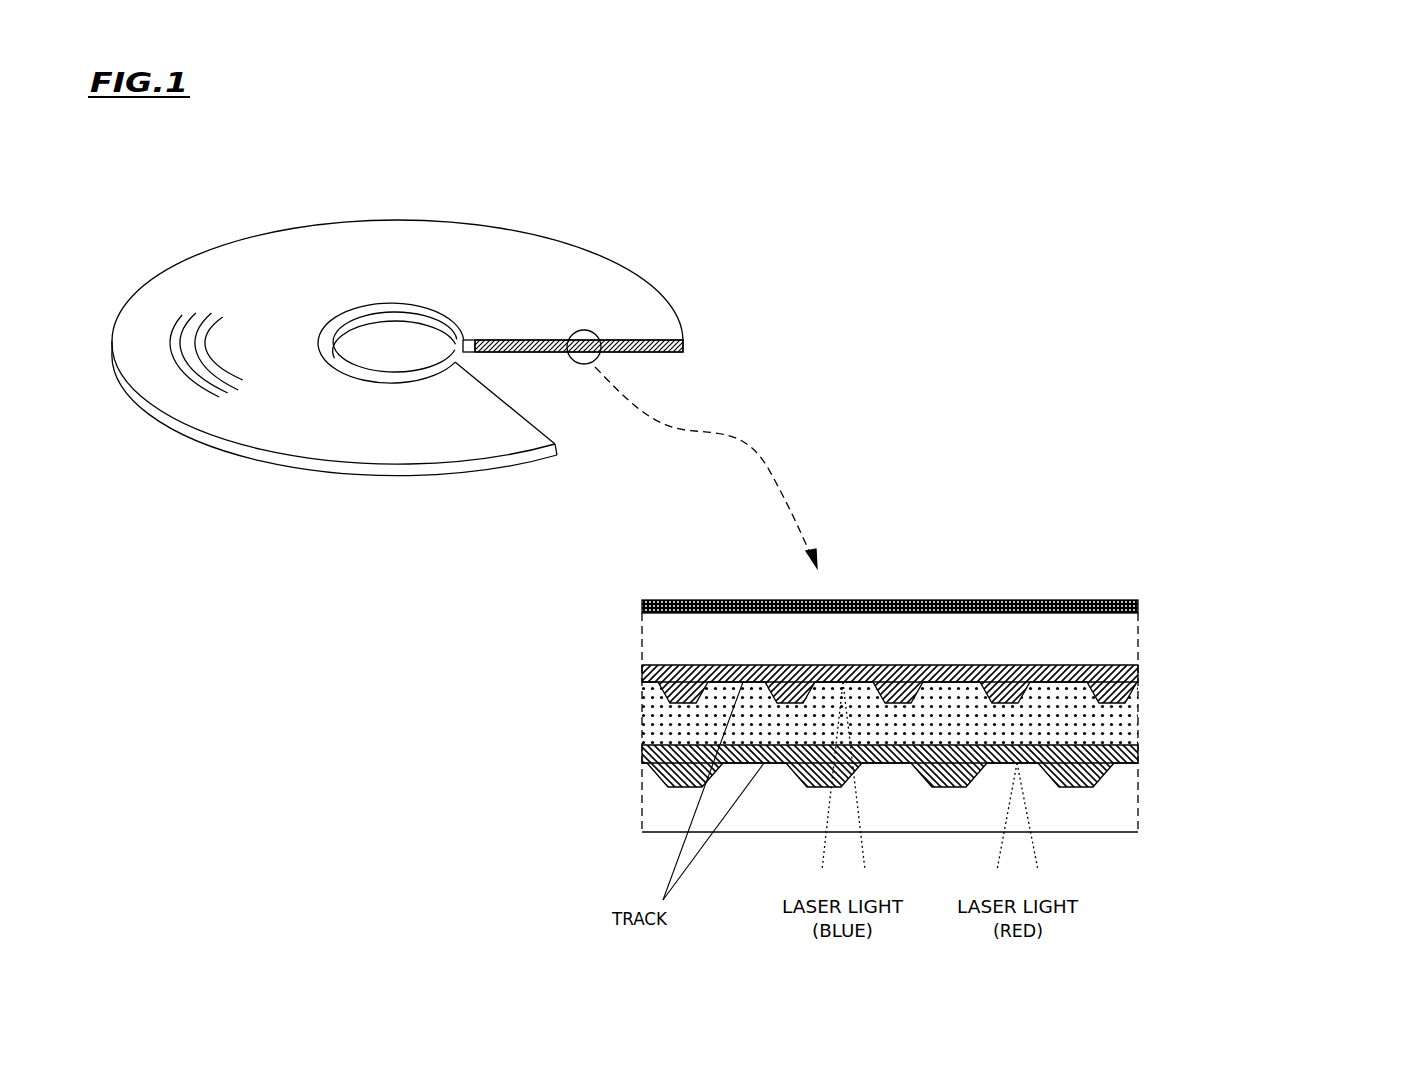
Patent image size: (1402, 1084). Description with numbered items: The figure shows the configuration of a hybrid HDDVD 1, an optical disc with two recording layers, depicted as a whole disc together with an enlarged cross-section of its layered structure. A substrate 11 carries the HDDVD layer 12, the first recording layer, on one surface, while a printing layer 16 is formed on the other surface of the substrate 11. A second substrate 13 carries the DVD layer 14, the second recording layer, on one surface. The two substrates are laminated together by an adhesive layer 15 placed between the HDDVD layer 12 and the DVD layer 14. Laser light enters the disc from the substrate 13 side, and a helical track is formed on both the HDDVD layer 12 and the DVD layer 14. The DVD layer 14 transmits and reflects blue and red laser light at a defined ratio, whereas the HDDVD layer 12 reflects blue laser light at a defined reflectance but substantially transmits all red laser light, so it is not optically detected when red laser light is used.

The hybrid HDDVD 1 is at (522, 244).
The substrate 11 is at (1152, 636).
The HDDVD layer 12 is at (637, 673).
The substrate 13 is at (1152, 803).
The DVD layer 14 is at (637, 757).
The adhesive layer 15 is at (1152, 720).
The printing layer 16 is at (1032, 562).